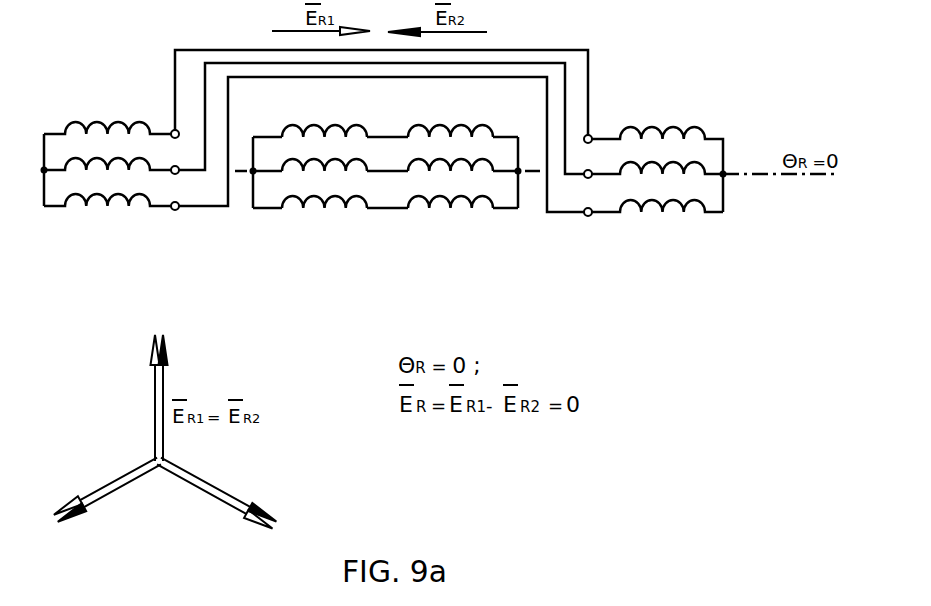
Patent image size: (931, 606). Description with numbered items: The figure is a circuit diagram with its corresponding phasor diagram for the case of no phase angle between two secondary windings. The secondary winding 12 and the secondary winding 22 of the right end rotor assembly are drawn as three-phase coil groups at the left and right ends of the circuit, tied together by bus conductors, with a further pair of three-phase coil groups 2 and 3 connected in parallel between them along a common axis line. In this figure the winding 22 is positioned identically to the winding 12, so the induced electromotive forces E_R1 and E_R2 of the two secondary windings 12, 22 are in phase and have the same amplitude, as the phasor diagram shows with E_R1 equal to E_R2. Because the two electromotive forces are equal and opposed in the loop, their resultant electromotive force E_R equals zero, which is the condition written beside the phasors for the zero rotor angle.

The secondary winding 12 is at (110, 151).
The first rotor winding 2 is at (324, 153).
The second rotor winding 3 is at (450, 153).
The secondary winding of the right end rotor assembly 22 is at (659, 156).